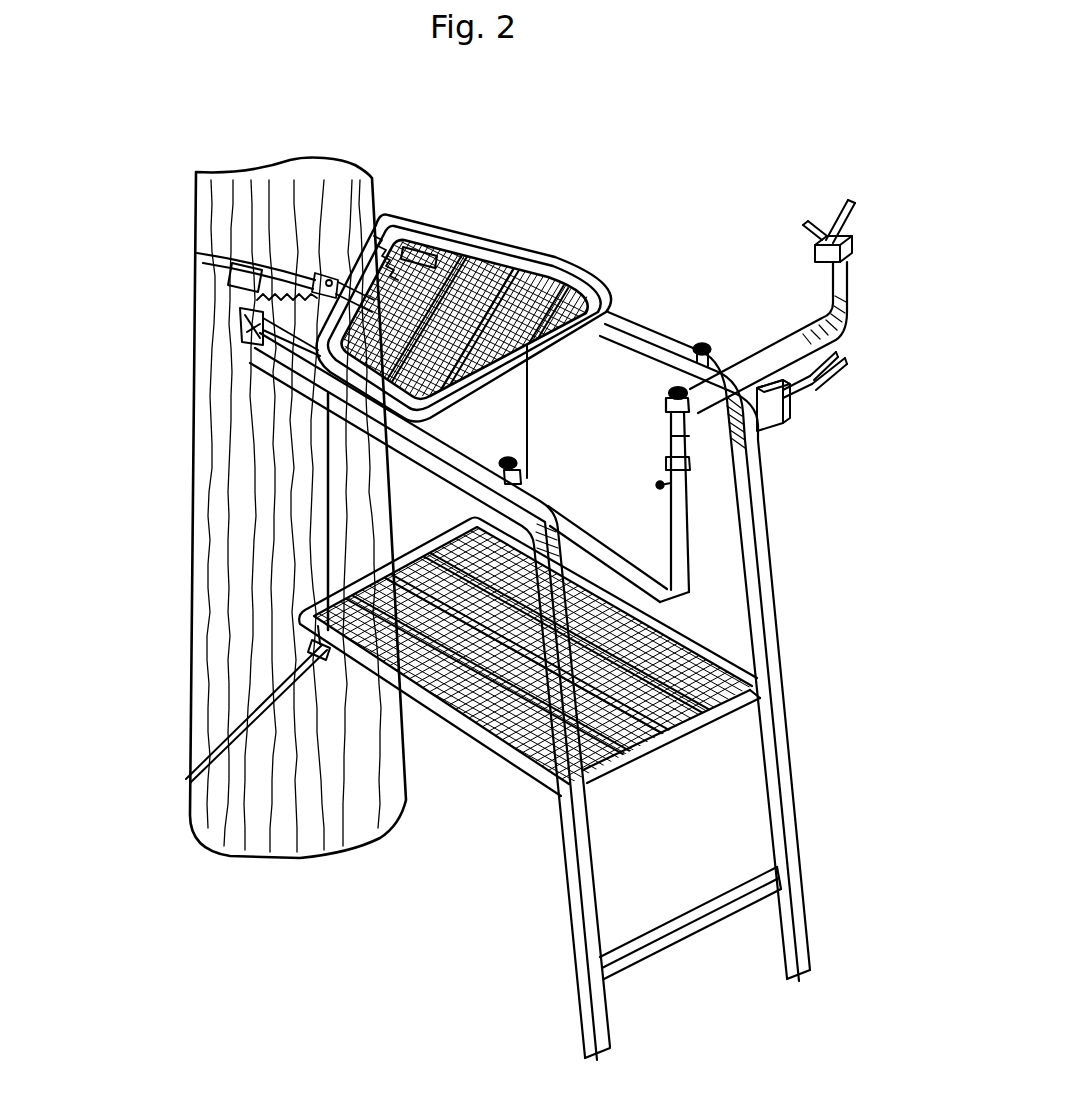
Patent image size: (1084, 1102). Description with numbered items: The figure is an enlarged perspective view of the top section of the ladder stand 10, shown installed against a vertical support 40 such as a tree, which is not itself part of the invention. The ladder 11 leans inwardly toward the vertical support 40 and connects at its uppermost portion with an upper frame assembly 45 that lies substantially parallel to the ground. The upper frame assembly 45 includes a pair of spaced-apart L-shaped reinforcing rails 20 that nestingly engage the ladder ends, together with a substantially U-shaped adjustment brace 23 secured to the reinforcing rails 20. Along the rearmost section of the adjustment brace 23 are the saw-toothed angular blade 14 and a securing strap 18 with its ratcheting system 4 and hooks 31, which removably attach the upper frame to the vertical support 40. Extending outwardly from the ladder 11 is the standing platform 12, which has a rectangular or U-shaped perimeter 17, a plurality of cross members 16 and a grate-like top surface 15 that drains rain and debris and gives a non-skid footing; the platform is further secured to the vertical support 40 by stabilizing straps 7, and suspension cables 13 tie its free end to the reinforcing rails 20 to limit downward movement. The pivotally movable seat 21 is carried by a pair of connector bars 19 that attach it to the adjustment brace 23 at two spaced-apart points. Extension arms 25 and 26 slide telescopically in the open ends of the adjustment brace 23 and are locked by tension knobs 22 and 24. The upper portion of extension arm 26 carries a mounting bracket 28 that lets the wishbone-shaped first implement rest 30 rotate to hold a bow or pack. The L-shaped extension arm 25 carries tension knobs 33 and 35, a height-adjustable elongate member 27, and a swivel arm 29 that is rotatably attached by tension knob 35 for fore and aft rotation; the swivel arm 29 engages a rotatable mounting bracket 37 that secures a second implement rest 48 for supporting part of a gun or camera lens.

The ratcheting system 4 is at (230, 287).
The stabilizing straps 7 is at (187, 783).
The ladder stand 10 is at (622, 236).
The ladder 11 is at (793, 793).
The standing platform 12 is at (503, 747).
The suspension cables 13 is at (530, 392).
The angular blade 14 is at (240, 318).
The top surface 15 is at (462, 723).
The cross members 16 is at (667, 732).
The perimeter 17 is at (435, 713).
The securing strap 18 is at (197, 253).
The connector bars 19 is at (420, 240).
The reinforcing rails 20 is at (305, 385).
The seat 21 is at (513, 242).
The tension knob 22 is at (503, 462).
The adjustment brace 23 is at (642, 327).
The tension knob 24 is at (705, 345).
The extension arm 25 is at (684, 562).
The extension arm 26 is at (688, 440).
The height-adjustable elongate member 27 is at (690, 543).
The mounting bracket 28 is at (780, 424).
The swivel arm 29 is at (830, 290).
The first implement rest 30 is at (828, 377).
The hooks 31 is at (420, 214).
The tension knob 33 is at (657, 485).
The tension knob 35 is at (689, 527).
The mounting bracket 37 is at (817, 260).
The vertical support 40 is at (178, 552).
The upper frame assembly 45 is at (490, 226).
The second implement rest 48 is at (823, 228).